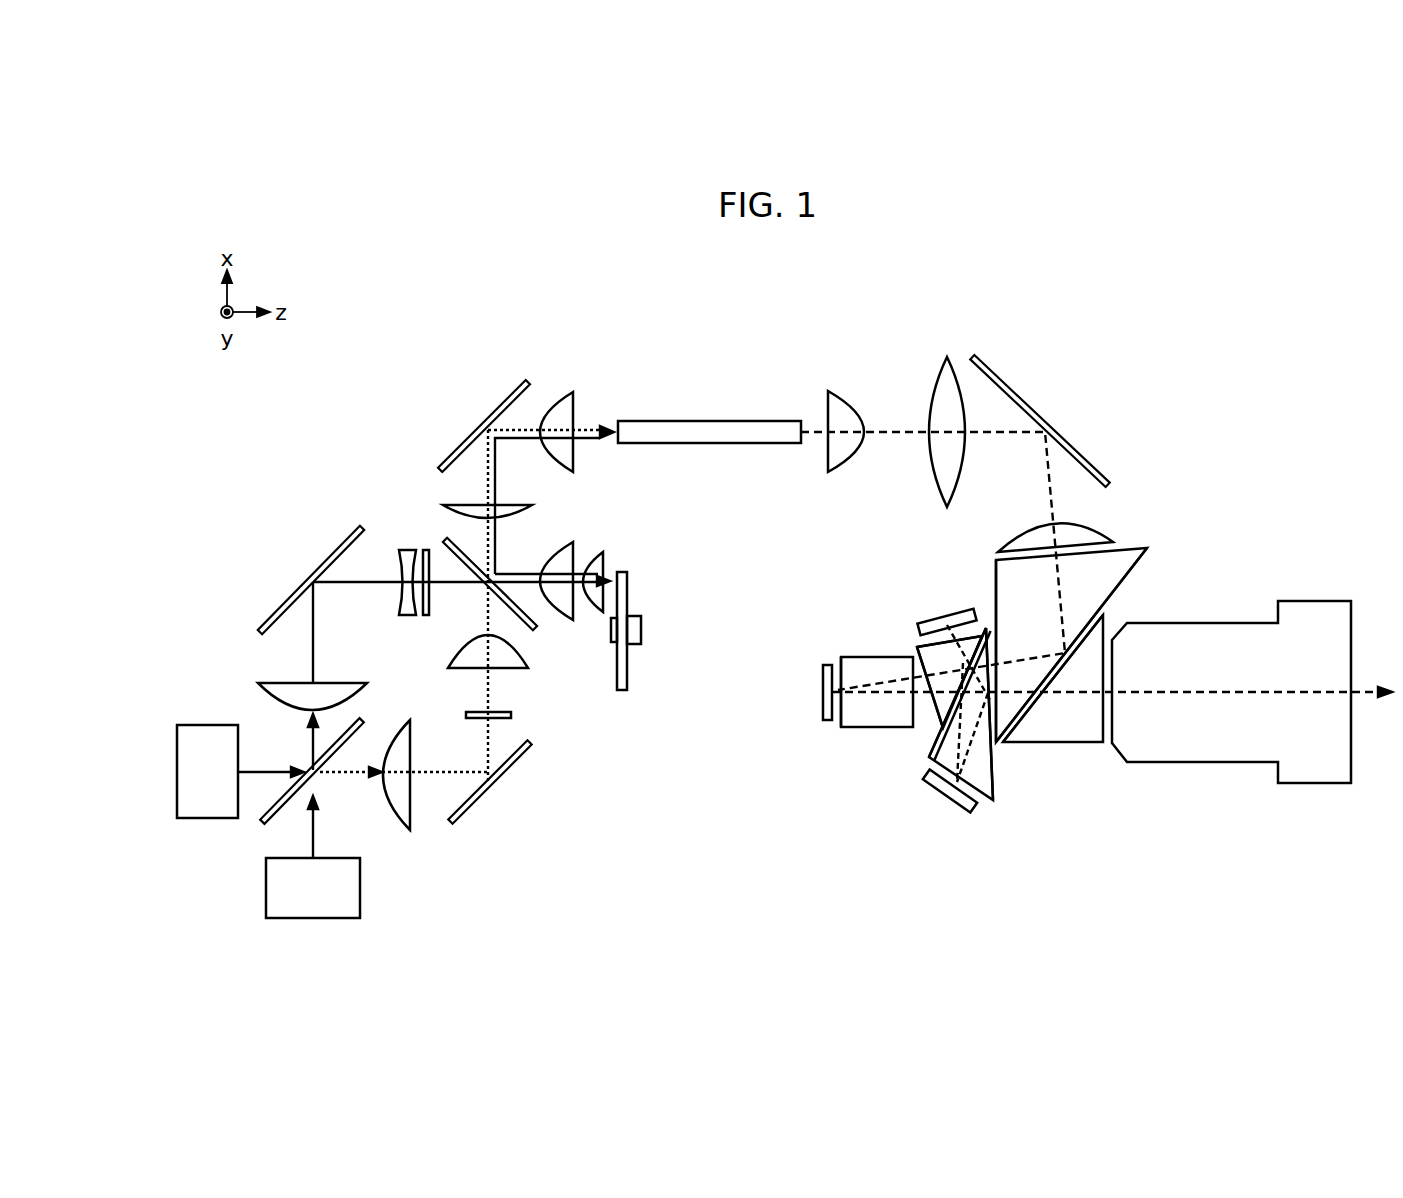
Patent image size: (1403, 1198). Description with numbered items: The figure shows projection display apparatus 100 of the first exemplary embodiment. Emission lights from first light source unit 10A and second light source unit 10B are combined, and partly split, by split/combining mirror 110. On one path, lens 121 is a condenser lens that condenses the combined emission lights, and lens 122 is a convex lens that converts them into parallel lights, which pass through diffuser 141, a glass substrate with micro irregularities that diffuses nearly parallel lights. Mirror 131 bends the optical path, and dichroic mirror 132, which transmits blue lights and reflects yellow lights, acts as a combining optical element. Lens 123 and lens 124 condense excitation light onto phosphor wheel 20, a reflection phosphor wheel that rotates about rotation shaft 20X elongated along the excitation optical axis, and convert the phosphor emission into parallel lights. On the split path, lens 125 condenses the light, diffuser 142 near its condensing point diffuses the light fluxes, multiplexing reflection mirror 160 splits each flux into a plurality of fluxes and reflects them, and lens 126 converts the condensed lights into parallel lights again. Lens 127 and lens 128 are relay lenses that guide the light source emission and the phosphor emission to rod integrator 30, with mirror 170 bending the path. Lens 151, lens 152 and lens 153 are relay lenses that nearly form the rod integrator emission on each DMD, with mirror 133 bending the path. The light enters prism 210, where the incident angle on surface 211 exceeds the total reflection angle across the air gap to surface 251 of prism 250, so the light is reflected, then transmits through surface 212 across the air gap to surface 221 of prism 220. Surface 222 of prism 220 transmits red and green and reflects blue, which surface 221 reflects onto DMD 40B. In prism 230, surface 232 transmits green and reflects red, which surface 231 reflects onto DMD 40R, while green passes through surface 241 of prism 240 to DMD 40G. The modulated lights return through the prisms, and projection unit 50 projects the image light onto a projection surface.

The projection display apparatus 100 is at (770, 322).
The first light source unit 10A is at (210, 748).
The second light source unit 10B is at (313, 900).
The split/combining mirror 110 is at (262, 823).
The mirror 131 is at (315, 568).
The dichroic mirror 132 is at (527, 625).
The mirror 133 is at (1030, 405).
The multiplexing reflection mirror 160 is at (478, 800).
The mirror 170 is at (462, 448).
The lens 121 is at (280, 693).
The lens 122 is at (405, 582).
The lens 123 is at (567, 553).
The lens 124 is at (600, 570).
The lens 125 is at (405, 810).
The lens 126 is at (505, 660).
The lens 127 is at (520, 510).
The lens 128 is at (570, 410).
The diffuser 141 is at (427, 580).
The diffuser 142 is at (466, 715).
The lens 151 is at (836, 420).
The lens 152 is at (940, 392).
The lens 153 is at (1110, 545).
The phosphor wheel 20 is at (622, 698).
The rotation shaft 20X is at (641, 628).
The rod integrator 30 is at (668, 430).
The prism 210 is at (1085, 603).
The surface 211 is at (1125, 575).
The surface 212 is at (995, 568).
The prism 220 is at (985, 782).
The surface 221 is at (992, 778).
The surface 222 is at (928, 757).
The prism 230 is at (920, 655).
The surface 231 is at (930, 722).
The surface 232 is at (913, 665).
The prism 240 is at (843, 662).
The surface 241 is at (860, 722).
The prism 250 is at (1085, 727).
The surface 251 is at (1027, 715).
The DMD 40R is at (940, 617).
The DMD 40G is at (822, 690).
The DMD 40B is at (945, 800).
The projection unit 50 is at (1222, 727).